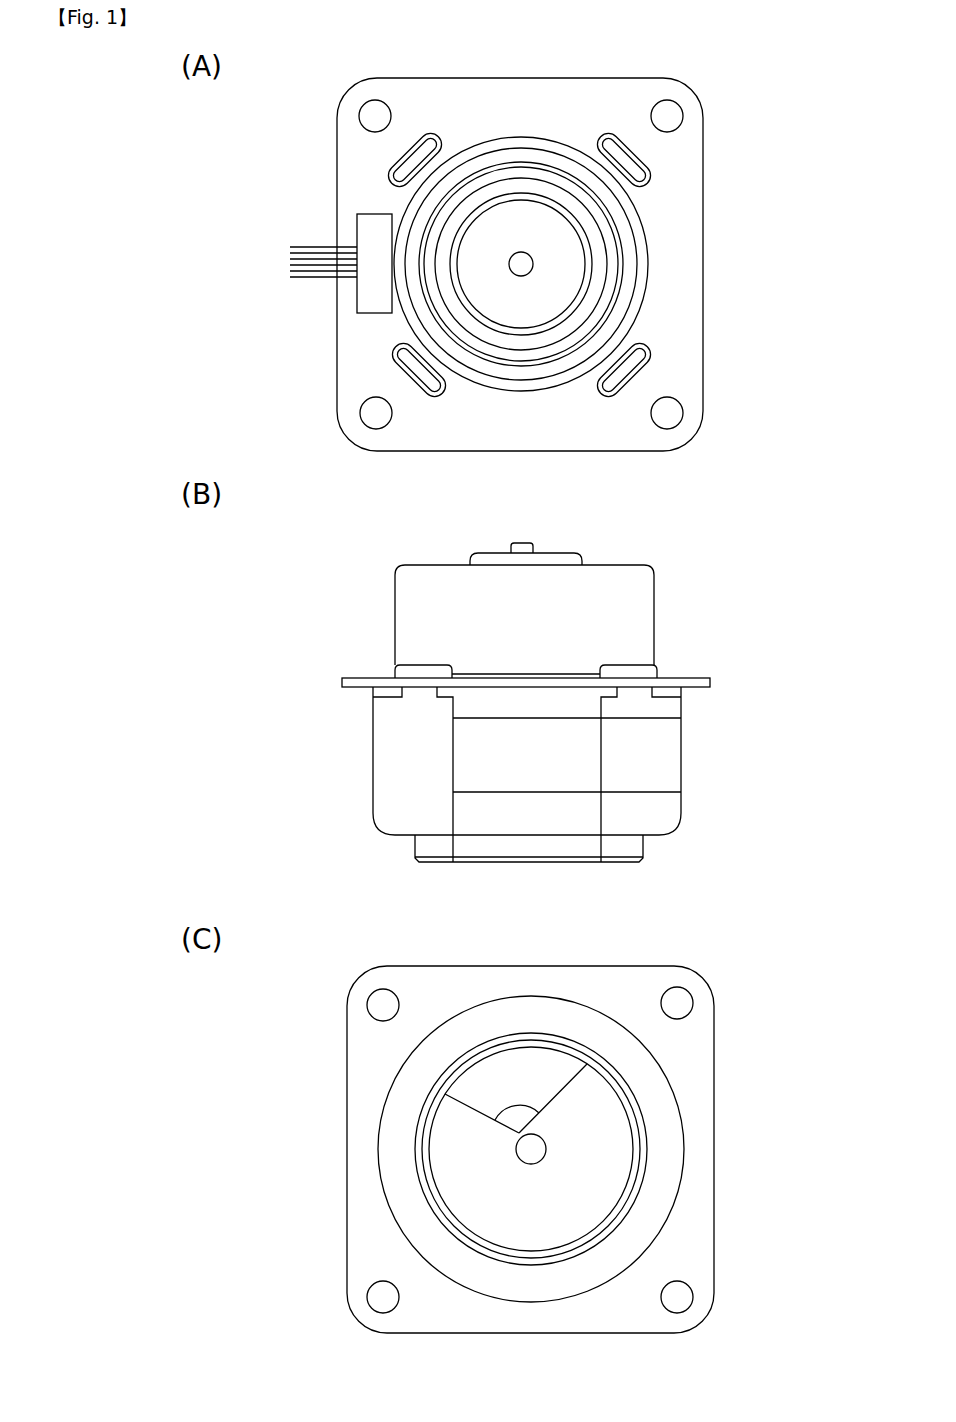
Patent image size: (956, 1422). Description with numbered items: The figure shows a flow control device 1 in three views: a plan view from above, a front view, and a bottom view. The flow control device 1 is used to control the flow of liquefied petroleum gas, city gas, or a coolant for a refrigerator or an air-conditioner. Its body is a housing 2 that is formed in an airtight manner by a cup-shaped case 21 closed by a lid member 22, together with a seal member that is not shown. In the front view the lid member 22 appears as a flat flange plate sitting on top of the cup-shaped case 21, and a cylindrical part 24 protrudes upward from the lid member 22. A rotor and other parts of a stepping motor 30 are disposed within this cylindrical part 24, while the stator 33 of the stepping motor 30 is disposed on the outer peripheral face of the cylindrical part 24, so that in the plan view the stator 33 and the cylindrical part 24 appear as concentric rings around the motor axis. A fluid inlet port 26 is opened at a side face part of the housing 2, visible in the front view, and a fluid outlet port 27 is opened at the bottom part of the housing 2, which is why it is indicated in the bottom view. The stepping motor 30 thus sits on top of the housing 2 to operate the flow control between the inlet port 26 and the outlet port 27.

The flow control device 1 is at (722, 130).
The housing 2 is at (703, 222).
The cup-shaped case 21 is at (683, 757).
The lid member 22 is at (710, 683).
The cylindrical part 24 is at (563, 242).
The fluid inlet port 26 is at (473, 748).
The fluid outlet port 27 is at (477, 1089).
The stepping motor 30 is at (560, 298).
The stator 33 is at (630, 280).